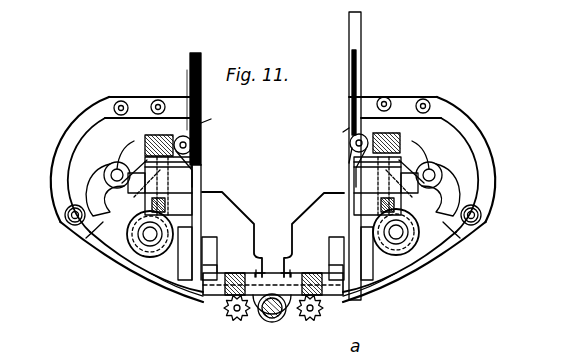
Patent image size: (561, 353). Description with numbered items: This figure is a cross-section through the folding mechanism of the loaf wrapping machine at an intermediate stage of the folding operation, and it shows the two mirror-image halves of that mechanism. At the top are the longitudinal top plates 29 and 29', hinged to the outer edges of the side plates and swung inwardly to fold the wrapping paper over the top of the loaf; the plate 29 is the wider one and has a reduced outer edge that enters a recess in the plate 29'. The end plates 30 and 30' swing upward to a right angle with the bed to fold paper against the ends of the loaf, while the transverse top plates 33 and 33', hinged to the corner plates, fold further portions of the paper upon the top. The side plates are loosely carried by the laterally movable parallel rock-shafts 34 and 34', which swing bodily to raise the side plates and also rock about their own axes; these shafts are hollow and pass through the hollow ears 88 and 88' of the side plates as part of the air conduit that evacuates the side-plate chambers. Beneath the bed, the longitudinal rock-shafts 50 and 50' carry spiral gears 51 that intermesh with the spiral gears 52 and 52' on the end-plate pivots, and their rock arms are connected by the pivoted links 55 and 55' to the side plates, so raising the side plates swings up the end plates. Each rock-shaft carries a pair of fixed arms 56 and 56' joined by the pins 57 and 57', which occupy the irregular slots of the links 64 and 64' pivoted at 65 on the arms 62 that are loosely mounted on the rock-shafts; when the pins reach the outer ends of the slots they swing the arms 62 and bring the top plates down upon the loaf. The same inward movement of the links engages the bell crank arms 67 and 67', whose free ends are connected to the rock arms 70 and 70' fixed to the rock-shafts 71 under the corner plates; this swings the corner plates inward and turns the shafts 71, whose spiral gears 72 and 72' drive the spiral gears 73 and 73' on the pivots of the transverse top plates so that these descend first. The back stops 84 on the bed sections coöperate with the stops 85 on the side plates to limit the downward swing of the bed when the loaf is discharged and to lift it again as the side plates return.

The longitudinal top plate 29 is at (376, 156).
The longitudinal top plate 29' is at (170, 157).
The end plate 30 is at (312, 234).
The end plate 30' is at (239, 234).
The transverse top plate 33 is at (371, 69).
The transverse top plate 33' is at (208, 100).
The rock-shaft 34 is at (390, 253).
The rock-shaft 34' is at (207, 253).
The longitudinal rock-shaft 50 is at (310, 324).
The longitudinal rock-shaft 50' is at (237, 323).
The spiral gear 51 is at (222, 311).
The spiral gear 52 is at (316, 274).
The spiral gear 52' is at (242, 274).
The pivoted link 55 is at (273, 267).
The pivoted link 55' is at (273, 271).
The fixed arm 56 is at (451, 225).
The fixed arm 56' is at (79, 239).
The pin 57 is at (423, 149).
The pin 57' is at (120, 149).
The arm 62 is at (55, 158).
The link 64 is at (433, 177).
The link 64' is at (108, 188).
The pivot 65 is at (141, 104).
The bell crank arm 67 is at (354, 189).
The bell crank arm 67' is at (200, 198).
The rock arm 70 is at (386, 186).
The rock arm 70' is at (179, 186).
The rock-shaft 71 is at (273, 135).
The spiral gear 72 is at (341, 160).
The spiral gear 72' is at (202, 161).
The spiral gear 73 is at (335, 130).
The spiral gear 73' is at (219, 117).
The back stop 84 is at (213, 300).
The stop 85 is at (160, 280).
The hollow ear 88 is at (368, 232).
The hollow ear 88' is at (179, 234).